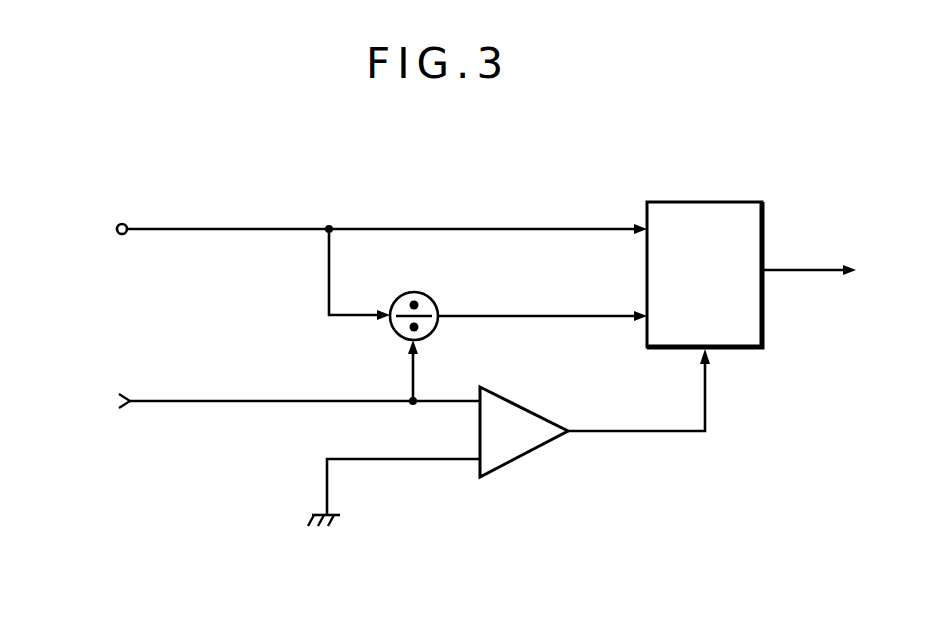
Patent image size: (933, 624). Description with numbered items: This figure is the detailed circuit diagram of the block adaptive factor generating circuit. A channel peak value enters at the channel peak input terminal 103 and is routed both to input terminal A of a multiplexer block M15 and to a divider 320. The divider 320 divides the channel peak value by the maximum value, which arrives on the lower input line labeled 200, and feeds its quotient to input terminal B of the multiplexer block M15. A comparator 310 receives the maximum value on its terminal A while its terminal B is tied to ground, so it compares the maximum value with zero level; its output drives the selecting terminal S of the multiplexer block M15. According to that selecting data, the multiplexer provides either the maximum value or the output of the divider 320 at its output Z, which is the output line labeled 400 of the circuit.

The channel peak input terminal 103 is at (357, 270).
The divider 320 is at (415, 293).
The comparator 310 is at (528, 410).
The multiplexer / selector M15 is at (701, 202).
The input signal 200 is at (273, 401).
The output signal 400 is at (835, 272).